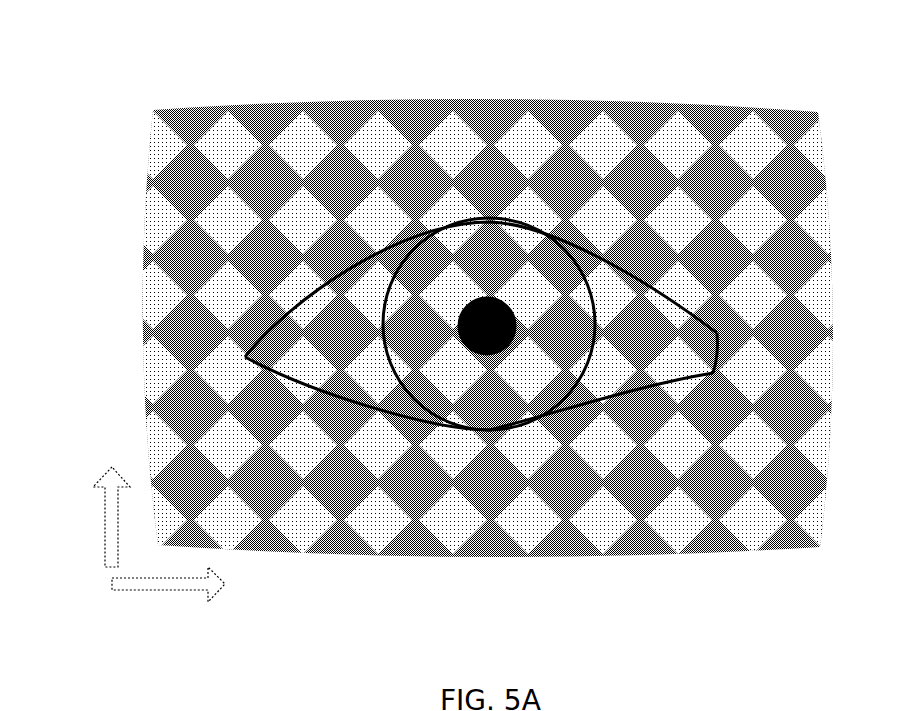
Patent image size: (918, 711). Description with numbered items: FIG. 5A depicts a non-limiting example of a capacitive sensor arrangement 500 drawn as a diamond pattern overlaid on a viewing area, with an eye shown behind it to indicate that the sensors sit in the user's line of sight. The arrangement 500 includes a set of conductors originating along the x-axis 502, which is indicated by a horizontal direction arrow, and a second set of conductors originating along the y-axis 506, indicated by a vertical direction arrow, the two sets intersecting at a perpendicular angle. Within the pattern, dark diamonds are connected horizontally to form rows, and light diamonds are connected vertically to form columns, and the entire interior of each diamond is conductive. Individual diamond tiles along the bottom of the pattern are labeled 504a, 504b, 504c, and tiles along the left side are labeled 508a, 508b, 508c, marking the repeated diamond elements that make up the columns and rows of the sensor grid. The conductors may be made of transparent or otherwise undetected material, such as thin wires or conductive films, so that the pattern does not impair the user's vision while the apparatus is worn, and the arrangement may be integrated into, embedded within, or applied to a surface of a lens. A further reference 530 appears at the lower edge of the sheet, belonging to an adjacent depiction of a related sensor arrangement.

The capacitive sensor arrangement 500 is at (790, 60).
The x-axis 502 is at (127, 590).
The checkerboard tile 504a is at (290, 493).
The checkerboard tile 504b is at (360, 493).
The checkerboard tile 504c is at (437, 497).
The y-axis 506 is at (105, 540).
The checkerboard tile row 508a is at (160, 200).
The checkerboard tile row 508b is at (155, 270).
The checkerboard tile row 508c is at (158, 345).
The display image 530 is at (818, 710).